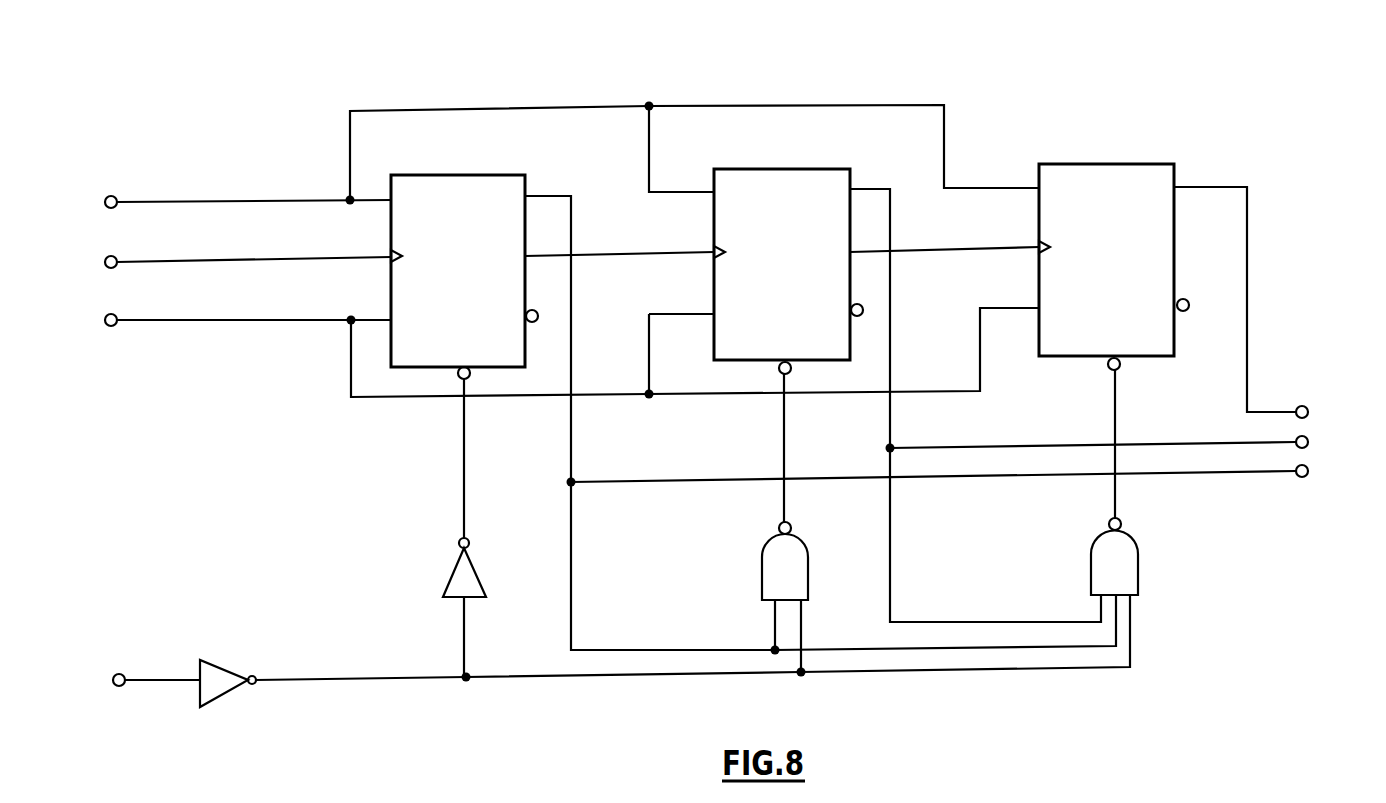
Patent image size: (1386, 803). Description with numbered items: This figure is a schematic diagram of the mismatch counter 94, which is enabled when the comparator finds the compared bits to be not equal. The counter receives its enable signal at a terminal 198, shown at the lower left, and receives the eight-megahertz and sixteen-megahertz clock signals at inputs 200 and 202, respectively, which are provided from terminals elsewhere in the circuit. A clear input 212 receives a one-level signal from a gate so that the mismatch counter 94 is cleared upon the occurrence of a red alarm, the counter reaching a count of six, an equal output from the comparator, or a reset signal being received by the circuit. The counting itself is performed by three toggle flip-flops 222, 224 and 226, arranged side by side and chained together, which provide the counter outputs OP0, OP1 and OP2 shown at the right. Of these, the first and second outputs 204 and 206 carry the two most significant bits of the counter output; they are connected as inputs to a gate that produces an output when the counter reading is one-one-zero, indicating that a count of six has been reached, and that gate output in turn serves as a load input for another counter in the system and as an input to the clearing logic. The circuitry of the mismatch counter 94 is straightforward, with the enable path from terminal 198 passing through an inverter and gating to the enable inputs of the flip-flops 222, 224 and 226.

The mismatch counter 94 is at (784, 61).
The clear input 212 is at (117, 196).
The input for 16-MHz clock signal 202 is at (117, 256).
The input for 8-MHz clock signal 200 is at (117, 314).
The flip-flop 222 is at (437, 175).
The flip-flop 224 is at (760, 169).
The flip-flop 226 is at (1087, 164).
The first output 204 is at (1302, 405).
The second output 206 is at (1297, 447).
The terminal 198 is at (119, 673).